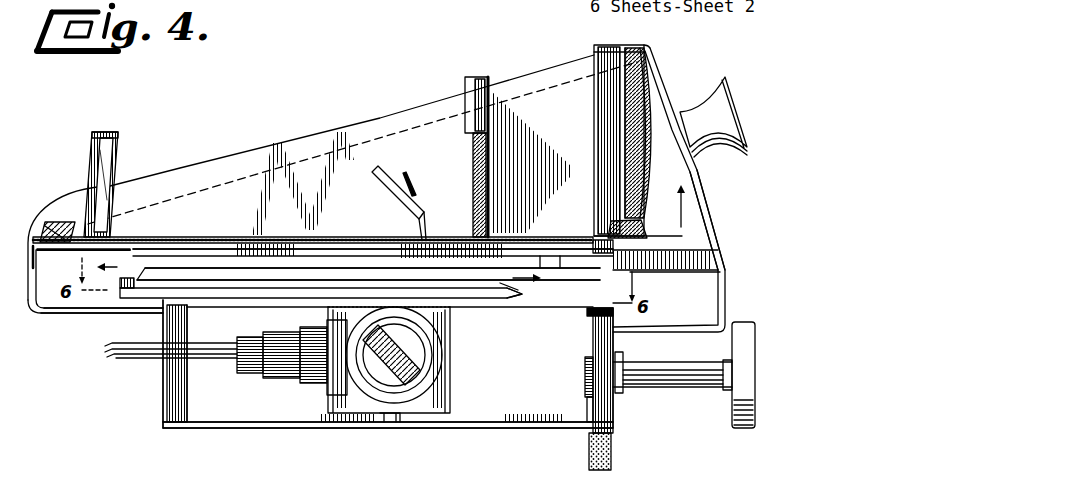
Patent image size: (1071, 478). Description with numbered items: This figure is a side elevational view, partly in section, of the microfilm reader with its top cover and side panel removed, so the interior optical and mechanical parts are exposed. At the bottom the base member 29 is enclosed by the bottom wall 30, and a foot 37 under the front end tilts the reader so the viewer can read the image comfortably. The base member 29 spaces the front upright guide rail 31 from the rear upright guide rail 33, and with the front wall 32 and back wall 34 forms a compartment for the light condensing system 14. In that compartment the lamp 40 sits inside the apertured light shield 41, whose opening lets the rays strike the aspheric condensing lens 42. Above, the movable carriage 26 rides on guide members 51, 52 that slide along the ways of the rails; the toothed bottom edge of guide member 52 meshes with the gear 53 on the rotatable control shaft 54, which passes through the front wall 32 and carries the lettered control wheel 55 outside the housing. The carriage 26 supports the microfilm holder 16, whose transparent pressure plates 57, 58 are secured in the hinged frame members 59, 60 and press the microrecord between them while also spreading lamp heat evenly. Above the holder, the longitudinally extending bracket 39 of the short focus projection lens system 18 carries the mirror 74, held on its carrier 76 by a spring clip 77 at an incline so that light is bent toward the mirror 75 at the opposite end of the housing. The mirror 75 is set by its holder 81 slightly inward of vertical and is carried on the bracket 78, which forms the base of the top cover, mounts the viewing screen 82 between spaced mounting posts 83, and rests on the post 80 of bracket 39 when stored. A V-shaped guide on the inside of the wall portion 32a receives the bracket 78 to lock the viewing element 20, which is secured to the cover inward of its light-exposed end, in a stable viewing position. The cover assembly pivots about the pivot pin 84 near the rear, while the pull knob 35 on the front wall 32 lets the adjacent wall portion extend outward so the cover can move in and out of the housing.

The light condensing system 14 is at (458, 394).
The microfilm holder 16 is at (527, 292).
The short focus projection lens system 18 is at (392, 218).
The viewing element 20 is at (646, 92).
The movable carriage 26 is at (562, 313).
The base member 29 is at (490, 420).
The bottom wall 30 is at (500, 428).
The front upright guide rail 31 is at (593, 405).
The front wall 32 is at (615, 403).
The wall portion 32a is at (713, 222).
The rear upright guide rail 33 is at (187, 388).
The back wall 34 is at (165, 389).
The pull knob 35 is at (735, 100).
The foot 37 is at (587, 462).
The bracket 39 is at (582, 258).
The lamp 40 is at (396, 360).
The light shield 41 is at (440, 330).
The aspheric condensing lens 42 is at (432, 362).
The guide member 51 is at (173, 304).
The guide member 52 is at (590, 318).
The gear 53 is at (585, 393).
The control shaft 54 is at (681, 377).
The control wheel 55 is at (741, 428).
The pressure plate 57 is at (211, 278).
The pressure plate 58 is at (262, 290).
The hinged frame member 59 is at (167, 258).
The hinged frame member 60 is at (140, 308).
The mirror 74 is at (380, 166).
The mirror 75 is at (118, 160).
The carrier 76 is at (427, 230).
The spring clip 77 is at (418, 196).
The bracket 78 is at (562, 234).
The post 80 is at (617, 250).
The holder 81 is at (100, 131).
The viewing screen 82 is at (473, 154).
The mounting post 83 is at (480, 77).
The pivot pin 84 is at (45, 235).